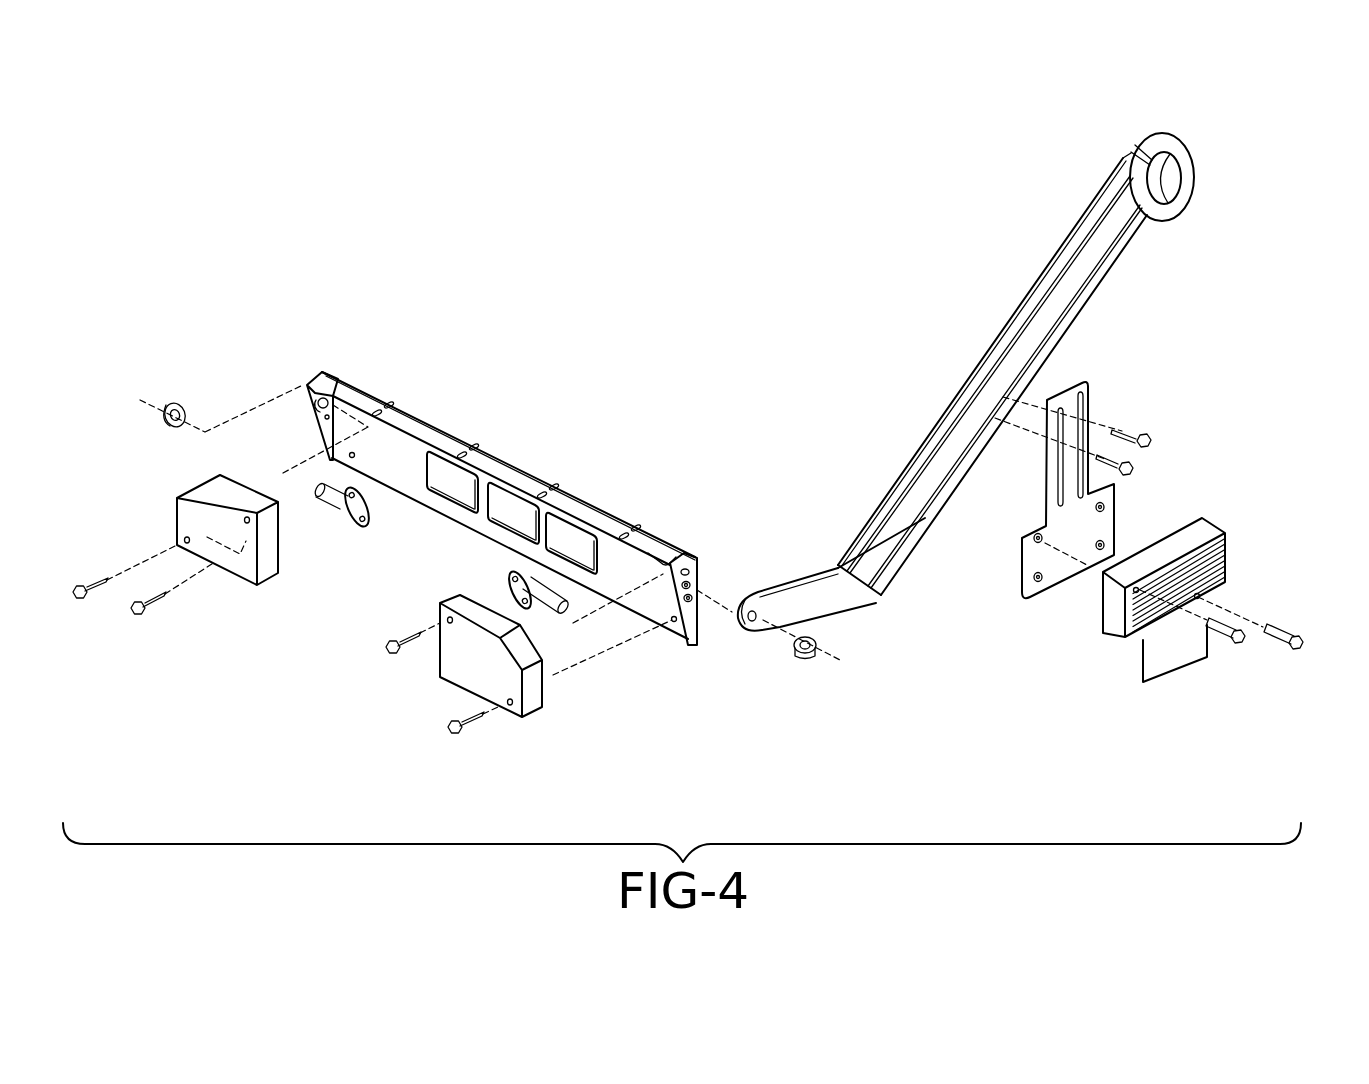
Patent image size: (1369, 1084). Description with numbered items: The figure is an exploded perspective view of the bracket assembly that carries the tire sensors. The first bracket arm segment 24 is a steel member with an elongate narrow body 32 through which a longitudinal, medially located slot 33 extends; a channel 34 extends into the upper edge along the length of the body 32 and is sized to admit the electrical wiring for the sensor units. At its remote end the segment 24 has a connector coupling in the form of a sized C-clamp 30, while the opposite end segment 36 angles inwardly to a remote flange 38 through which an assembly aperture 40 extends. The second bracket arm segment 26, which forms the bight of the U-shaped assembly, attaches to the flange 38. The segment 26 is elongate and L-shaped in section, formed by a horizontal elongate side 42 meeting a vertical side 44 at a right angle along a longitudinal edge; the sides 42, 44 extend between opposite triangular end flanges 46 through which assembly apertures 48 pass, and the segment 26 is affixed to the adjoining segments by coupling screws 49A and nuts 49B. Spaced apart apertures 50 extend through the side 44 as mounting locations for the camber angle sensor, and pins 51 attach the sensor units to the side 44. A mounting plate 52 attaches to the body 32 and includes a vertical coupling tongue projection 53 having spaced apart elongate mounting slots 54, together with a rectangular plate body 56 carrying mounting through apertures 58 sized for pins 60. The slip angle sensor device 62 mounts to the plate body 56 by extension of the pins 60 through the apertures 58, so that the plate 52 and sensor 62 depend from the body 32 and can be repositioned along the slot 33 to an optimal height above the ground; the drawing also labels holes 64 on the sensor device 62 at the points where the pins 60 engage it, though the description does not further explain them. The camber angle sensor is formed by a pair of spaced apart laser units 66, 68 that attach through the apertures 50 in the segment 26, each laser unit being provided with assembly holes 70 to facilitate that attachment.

The first bracket arm segment 24 is at (900, 555).
The second bracket arm segment 26 is at (426, 409).
The C-clamp 30 is at (1190, 150).
The body 32 is at (1127, 253).
The slot 33 is at (1095, 290).
The channel 34 is at (1028, 303).
The end segment 36 is at (835, 617).
The flange 38 is at (749, 625).
The assembly aperture 40 is at (768, 617).
The horizontal elongate side 42 is at (505, 465).
The vertical side 44 is at (695, 638).
The triangular end flanges 46 is at (320, 427).
The assembly apertures 48 is at (324, 402).
The coupling screws 49A is at (333, 500).
The nuts 49B is at (165, 423).
The apertures 50 is at (353, 455).
The pins 51 is at (88, 580).
The mounting plate 52 is at (1120, 499).
The vertical coupling tongue projection 53 is at (1055, 478).
The mounting slots 54 is at (1085, 380).
The rectangular plate body 56 is at (1113, 537).
The mounting through apertures 58 is at (1034, 583).
The pins 60 is at (510, 512).
The sensor device 62 is at (1228, 560).
The housing holes 64 is at (1199, 597).
The laser unit 66 is at (530, 718).
The laser unit 68 is at (265, 578).
The assembly holes 70 is at (247, 517).